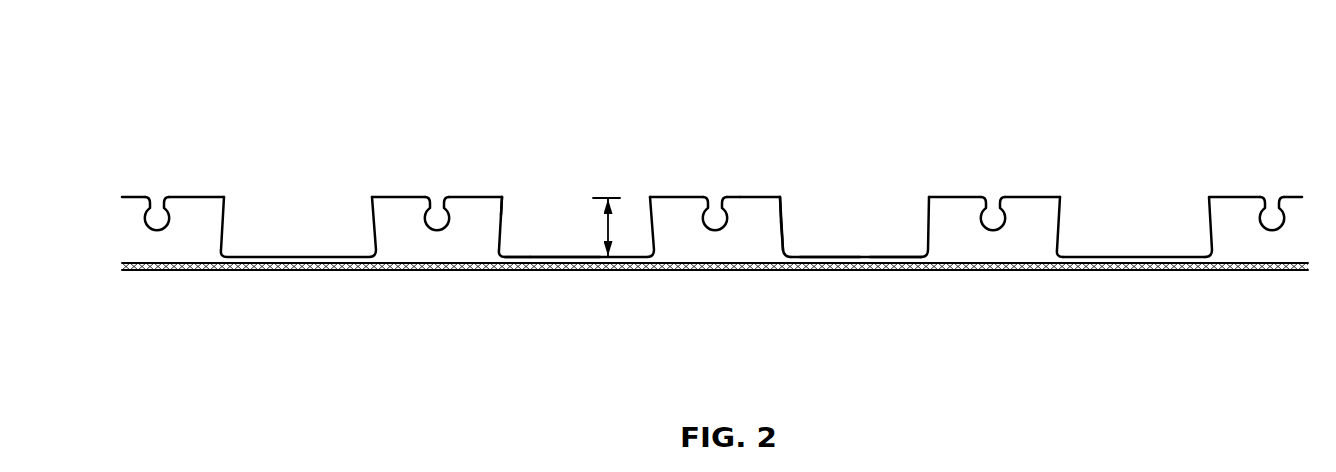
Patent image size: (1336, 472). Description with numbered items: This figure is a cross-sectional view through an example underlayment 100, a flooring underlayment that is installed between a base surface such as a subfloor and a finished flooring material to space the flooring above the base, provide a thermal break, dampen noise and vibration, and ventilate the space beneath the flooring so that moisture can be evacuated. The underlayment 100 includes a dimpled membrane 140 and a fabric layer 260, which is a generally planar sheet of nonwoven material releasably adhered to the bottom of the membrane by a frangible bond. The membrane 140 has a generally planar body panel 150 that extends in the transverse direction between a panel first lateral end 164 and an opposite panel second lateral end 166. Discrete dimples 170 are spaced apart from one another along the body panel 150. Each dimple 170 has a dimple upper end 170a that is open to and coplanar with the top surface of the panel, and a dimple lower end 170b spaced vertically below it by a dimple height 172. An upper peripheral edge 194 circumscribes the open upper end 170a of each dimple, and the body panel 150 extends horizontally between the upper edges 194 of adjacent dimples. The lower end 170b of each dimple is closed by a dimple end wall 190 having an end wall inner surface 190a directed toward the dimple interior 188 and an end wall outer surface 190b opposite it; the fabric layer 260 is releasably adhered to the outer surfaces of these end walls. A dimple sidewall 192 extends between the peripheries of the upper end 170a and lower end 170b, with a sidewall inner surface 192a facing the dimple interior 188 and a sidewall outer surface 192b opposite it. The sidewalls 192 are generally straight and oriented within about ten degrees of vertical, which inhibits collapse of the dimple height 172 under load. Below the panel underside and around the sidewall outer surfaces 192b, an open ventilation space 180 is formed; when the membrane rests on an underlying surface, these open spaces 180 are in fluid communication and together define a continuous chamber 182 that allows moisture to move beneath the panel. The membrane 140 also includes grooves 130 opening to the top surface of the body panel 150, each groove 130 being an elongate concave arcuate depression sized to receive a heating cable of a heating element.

The underlayment 100 is at (317, 196).
The groove 130 is at (157, 201).
The dimpled membrane 140 is at (518, 259).
The body panel 150 is at (741, 197).
The panel first lateral end 164 is at (163, 272).
The panel second lateral end 166 is at (1288, 120).
The dimple 170 is at (531, 228).
The dimple upper end 170a is at (570, 212).
The dimple lower end 170b is at (569, 249).
The dimple height 172 is at (609, 232).
The open ventilation space 180 is at (1032, 237).
The continuous chamber 182 is at (982, 253).
The dimple interior 188 is at (915, 243).
The dimple end wall 190 is at (868, 257).
The end wall inner surface 190a is at (831, 255).
The end wall outer surface 190b is at (907, 268).
The dimple sidewall 192 is at (781, 230).
The sidewall inner surface 192a is at (781, 217).
The sidewall outer surface 192b is at (768, 221).
The upper peripheral edge 194 is at (1064, 208).
The fabric layer 260 is at (700, 263).